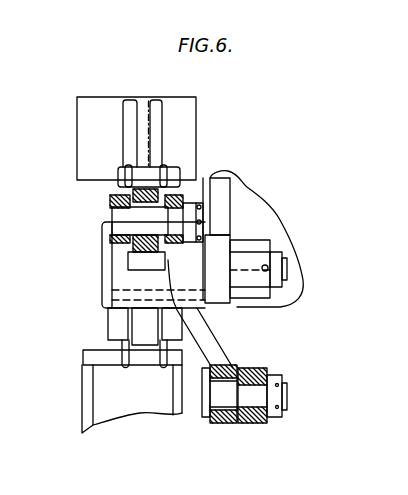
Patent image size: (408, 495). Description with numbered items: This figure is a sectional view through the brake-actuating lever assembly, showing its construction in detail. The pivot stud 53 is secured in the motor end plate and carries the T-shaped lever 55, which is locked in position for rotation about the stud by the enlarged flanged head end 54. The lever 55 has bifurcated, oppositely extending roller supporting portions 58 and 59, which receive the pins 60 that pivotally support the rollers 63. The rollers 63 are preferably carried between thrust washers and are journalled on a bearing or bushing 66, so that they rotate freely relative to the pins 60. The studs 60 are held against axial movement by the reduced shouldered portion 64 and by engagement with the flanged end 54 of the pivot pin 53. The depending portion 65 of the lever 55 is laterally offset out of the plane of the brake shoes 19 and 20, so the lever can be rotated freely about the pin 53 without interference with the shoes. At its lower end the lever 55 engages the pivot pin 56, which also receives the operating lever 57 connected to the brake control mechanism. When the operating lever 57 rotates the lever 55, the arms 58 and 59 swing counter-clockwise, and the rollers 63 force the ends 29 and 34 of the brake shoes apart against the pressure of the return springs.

The brake shoe 19 is at (192, 128).
The end of brake shoe 29 is at (118, 177).
The rollers 63 is at (182, 181).
The reduced shouldered portion 64 is at (184, 196).
The pivot stud 53 is at (282, 262).
The roller supporting portion 58 is at (110, 200).
The bushing 66 is at (140, 221).
The pin 60 is at (112, 222).
The head end 54 is at (110, 255).
The T-shaped lever 55 is at (118, 277).
The roller supporting portion 59 is at (112, 322).
The end of brake shoe 34 is at (95, 360).
The brake shoe 20 is at (88, 402).
The depending portion of lever 65 is at (220, 343).
The pivot pin 56 is at (218, 397).
The operating lever 57 is at (247, 423).